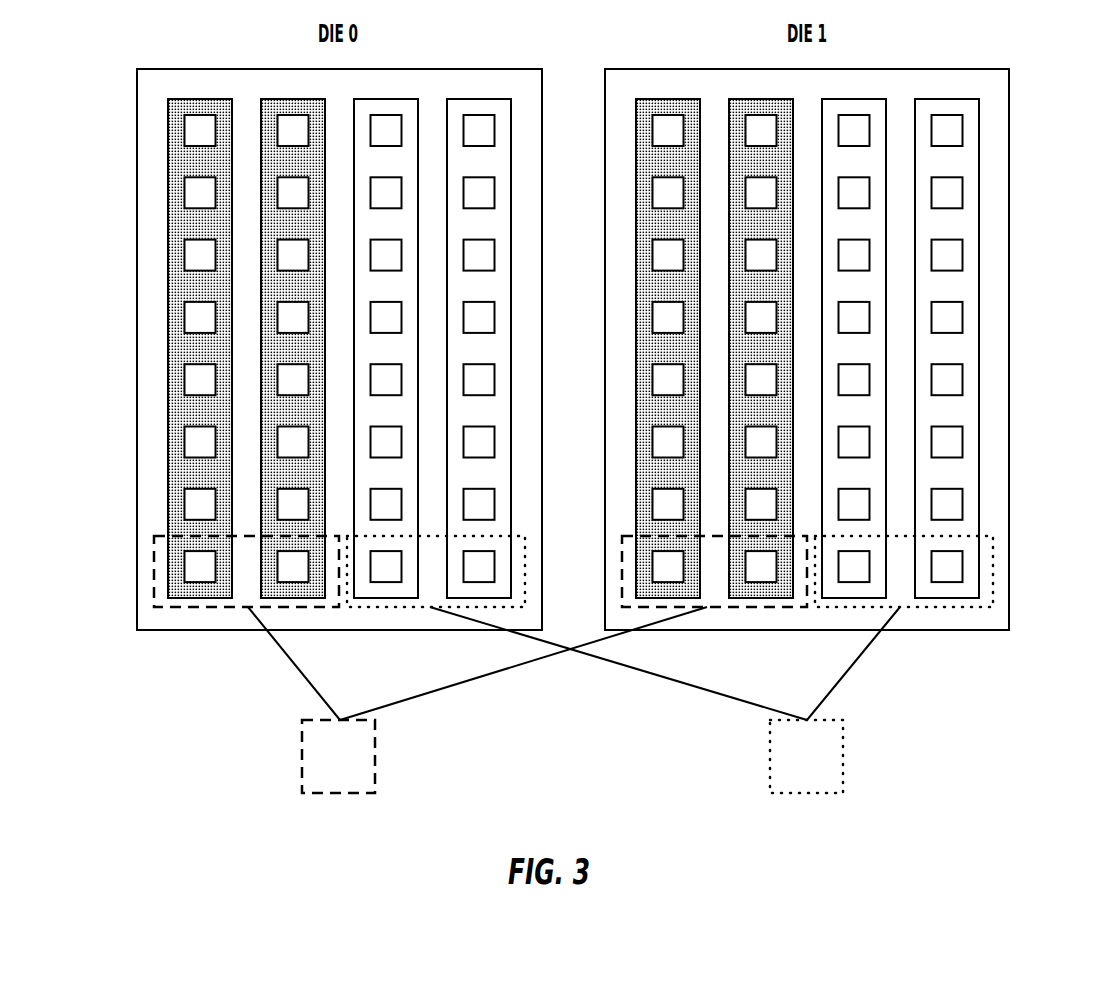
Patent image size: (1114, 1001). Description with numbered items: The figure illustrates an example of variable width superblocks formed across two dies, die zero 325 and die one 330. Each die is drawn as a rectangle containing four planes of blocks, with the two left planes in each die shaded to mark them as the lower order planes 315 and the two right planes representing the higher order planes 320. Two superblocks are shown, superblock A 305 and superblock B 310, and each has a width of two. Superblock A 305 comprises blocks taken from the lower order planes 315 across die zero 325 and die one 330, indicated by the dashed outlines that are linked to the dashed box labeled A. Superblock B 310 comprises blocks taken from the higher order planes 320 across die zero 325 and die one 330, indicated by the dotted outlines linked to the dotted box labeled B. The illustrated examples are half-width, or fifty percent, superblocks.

The superblock A 305 is at (302, 756).
The superblock B 310 is at (770, 756).
The lower order planes 315 is at (168, 120).
The higher order planes 320 is at (510, 99).
The DIE 0 325 is at (137, 69).
The DIE 1 330 is at (1009, 69).